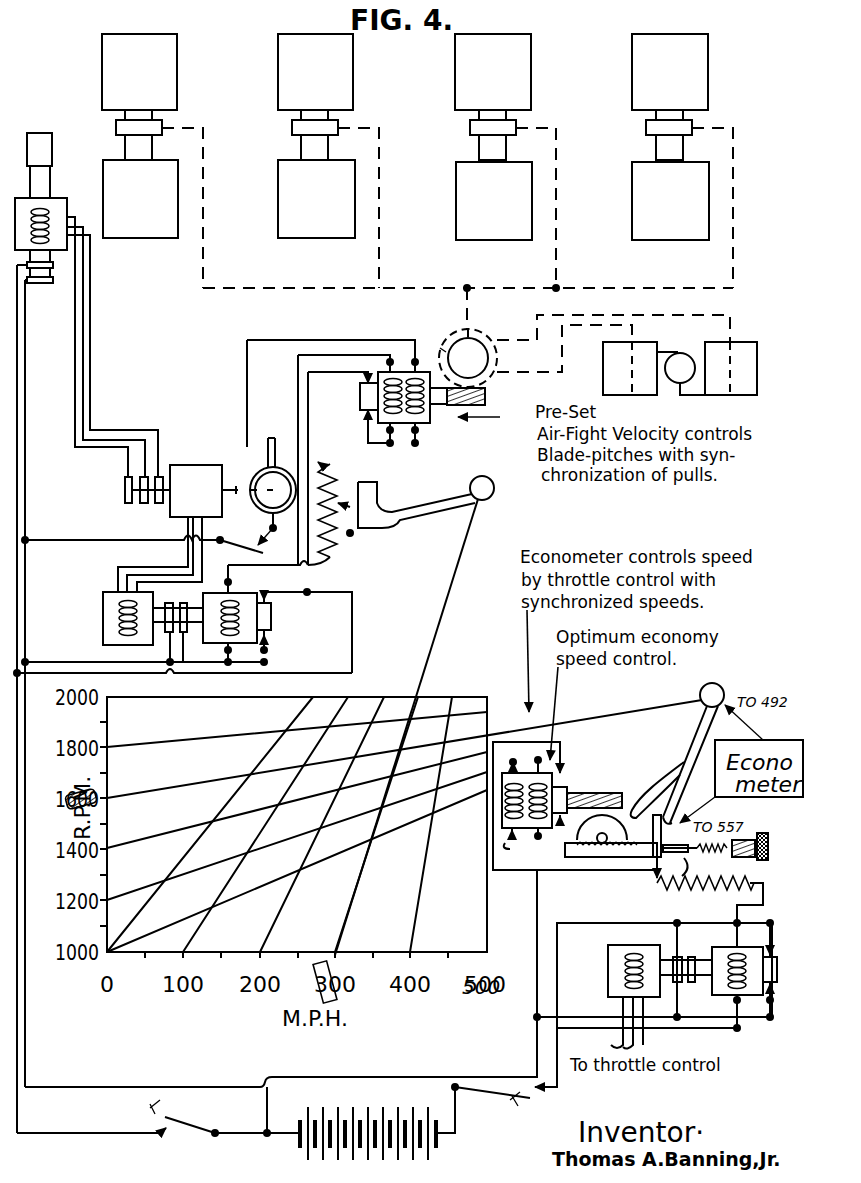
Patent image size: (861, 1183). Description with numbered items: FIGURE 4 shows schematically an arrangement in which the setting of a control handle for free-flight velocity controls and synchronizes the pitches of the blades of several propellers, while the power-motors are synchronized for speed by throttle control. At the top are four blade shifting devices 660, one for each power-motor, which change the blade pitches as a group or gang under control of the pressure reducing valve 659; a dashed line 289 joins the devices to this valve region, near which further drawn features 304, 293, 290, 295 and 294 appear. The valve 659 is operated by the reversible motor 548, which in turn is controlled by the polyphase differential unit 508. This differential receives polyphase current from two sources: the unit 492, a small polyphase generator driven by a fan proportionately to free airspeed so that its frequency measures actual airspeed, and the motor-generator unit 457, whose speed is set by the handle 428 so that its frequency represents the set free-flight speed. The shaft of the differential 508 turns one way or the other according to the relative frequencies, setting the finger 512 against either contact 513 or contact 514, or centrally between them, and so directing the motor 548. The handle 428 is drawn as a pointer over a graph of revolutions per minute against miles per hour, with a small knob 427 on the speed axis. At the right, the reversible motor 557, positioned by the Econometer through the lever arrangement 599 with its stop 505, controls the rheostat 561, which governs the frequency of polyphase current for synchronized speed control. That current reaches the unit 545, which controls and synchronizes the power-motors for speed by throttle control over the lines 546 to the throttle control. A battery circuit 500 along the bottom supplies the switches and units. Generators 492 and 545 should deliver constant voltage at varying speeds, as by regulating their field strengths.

The blade shifting device 660 is at (417, 161).
The control bus line 289 is at (464, 288).
The polyphase generator unit 492 is at (67, 200).
The polyphase differential unit 508 is at (195, 528).
The finger 512 is at (282, 445).
The contact 513 is at (286, 447).
The contact 514 is at (260, 448).
The reversible motor 548 is at (428, 428).
The pressure reducing valve 659 is at (468, 358).
The connection 304 is at (450, 344).
The dashed control line 293 is at (537, 325).
The pressure unit P.1 290 is at (603, 372).
The connecting element 295 is at (692, 340).
The unit R.1 294 is at (757, 380).
The motor-generator unit 457 is at (278, 636).
The rpm adjusting knob 427 is at (98, 805).
The handle 428 is at (310, 962).
The lever assembly 599 is at (556, 773).
The reversible motor 557 is at (581, 810).
The stop block 505 is at (763, 797).
The rheostat 561 is at (656, 888).
The throttle control unit 545 is at (706, 945).
The throttle control lines 546 is at (648, 1046).
The battery circuit 500 is at (287, 1015).